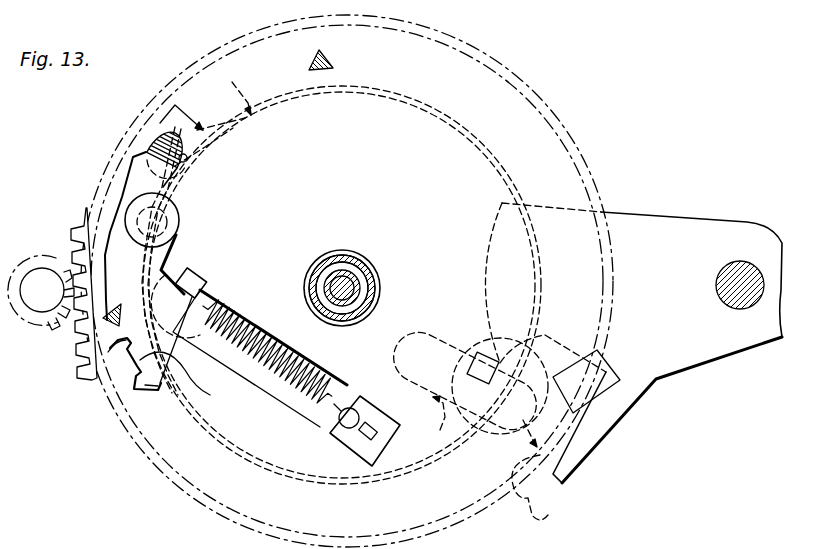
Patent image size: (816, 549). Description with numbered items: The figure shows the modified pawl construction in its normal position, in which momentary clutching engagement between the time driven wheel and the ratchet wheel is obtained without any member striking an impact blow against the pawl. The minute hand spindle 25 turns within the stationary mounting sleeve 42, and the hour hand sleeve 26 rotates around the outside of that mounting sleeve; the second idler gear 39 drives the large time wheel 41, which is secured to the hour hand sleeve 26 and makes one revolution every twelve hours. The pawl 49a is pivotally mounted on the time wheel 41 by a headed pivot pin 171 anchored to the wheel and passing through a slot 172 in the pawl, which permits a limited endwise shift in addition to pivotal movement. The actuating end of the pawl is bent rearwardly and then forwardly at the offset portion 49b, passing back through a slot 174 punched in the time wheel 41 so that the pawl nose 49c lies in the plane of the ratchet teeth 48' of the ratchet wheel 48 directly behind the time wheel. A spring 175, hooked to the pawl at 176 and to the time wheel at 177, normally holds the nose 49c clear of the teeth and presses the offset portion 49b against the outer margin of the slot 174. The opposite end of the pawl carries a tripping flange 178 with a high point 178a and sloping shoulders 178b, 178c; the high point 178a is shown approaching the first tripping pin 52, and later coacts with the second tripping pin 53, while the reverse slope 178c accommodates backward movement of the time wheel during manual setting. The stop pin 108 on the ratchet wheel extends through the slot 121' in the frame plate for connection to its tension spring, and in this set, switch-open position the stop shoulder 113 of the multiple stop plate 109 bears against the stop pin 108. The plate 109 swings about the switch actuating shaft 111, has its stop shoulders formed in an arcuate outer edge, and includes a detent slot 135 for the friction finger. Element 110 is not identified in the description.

The time wheel 41 is at (118, 157).
The tripping pin 53 is at (309, 60).
The ratchet wheel 48 is at (228, 90).
The ratchet teeth 48' is at (193, 110).
The pawl nose 49c is at (232, 132).
The offset portion of the pawl 49b is at (152, 160).
The slot 174 is at (187, 160).
The pawl 49a is at (120, 248).
The headed pivot pin 171 is at (170, 215).
The slot 172 is at (168, 228).
The second idler gear 39 is at (36, 274).
The tripping pin 52 is at (103, 318).
The spring hook point on pawl 176 is at (203, 286).
The spring 175 is at (268, 340).
The spring hook point on time wheel 177 is at (362, 412).
The tripping flange 178 is at (132, 370).
The high point 178a is at (195, 378).
The sloping shoulder 178b is at (110, 347).
The sloping shoulder 178c is at (162, 393).
The minute hand spindle 25 is at (360, 270).
The hour hand sleeve 26 is at (372, 293).
The mounting sleeve 42 is at (312, 299).
The stop pin 108 is at (470, 370).
The slot 121' is at (480, 395).
The stop shoulder 113 is at (540, 334).
The multiple stop plate 109 is at (663, 232).
The switch actuating shaft 111 is at (737, 264).
The slot 135 is at (616, 364).
The lever tail 110 is at (535, 498).